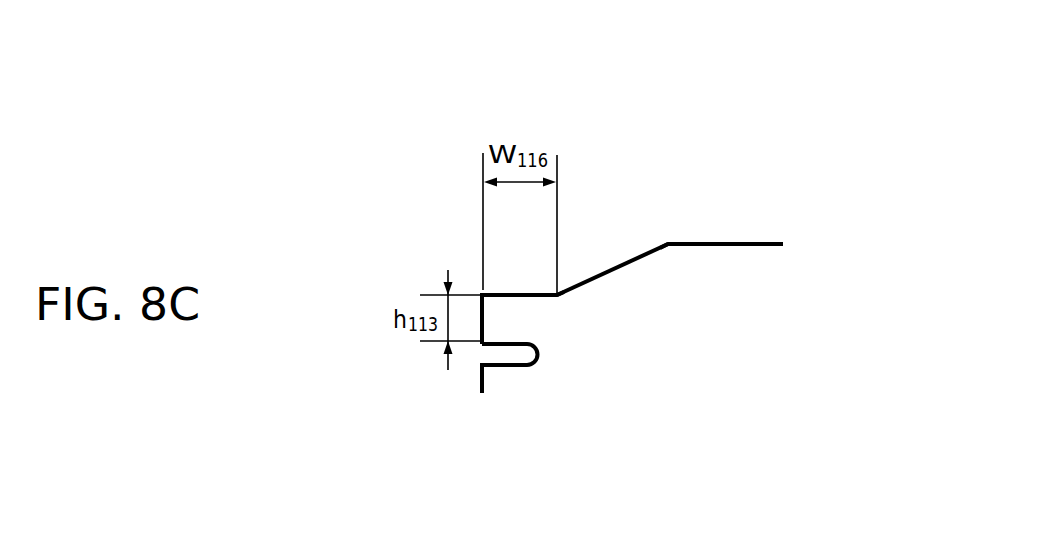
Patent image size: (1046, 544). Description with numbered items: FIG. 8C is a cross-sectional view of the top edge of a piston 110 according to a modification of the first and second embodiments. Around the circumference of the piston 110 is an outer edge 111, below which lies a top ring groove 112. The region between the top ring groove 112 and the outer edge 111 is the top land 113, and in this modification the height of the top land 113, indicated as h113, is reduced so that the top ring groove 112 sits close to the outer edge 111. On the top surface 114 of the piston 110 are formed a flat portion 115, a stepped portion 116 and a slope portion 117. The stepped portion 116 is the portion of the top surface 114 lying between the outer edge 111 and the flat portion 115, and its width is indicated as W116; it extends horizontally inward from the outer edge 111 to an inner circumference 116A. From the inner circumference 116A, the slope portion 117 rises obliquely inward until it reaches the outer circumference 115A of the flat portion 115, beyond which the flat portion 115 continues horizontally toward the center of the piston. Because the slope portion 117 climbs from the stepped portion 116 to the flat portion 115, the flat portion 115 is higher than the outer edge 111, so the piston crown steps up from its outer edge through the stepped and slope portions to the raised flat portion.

The piston 110 is at (378, 426).
The outer edge 111 is at (481, 292).
The top ring groove 112 is at (500, 357).
The top land 113 is at (488, 344).
The top surface 114 is at (658, 147).
The flat portion 115 is at (755, 242).
The outer circumference of the flat portion 115A is at (672, 242).
The stepped portion 116 is at (505, 292).
The inner circumference of the stepped portion 116A is at (558, 293).
The slope portion 117 is at (605, 271).